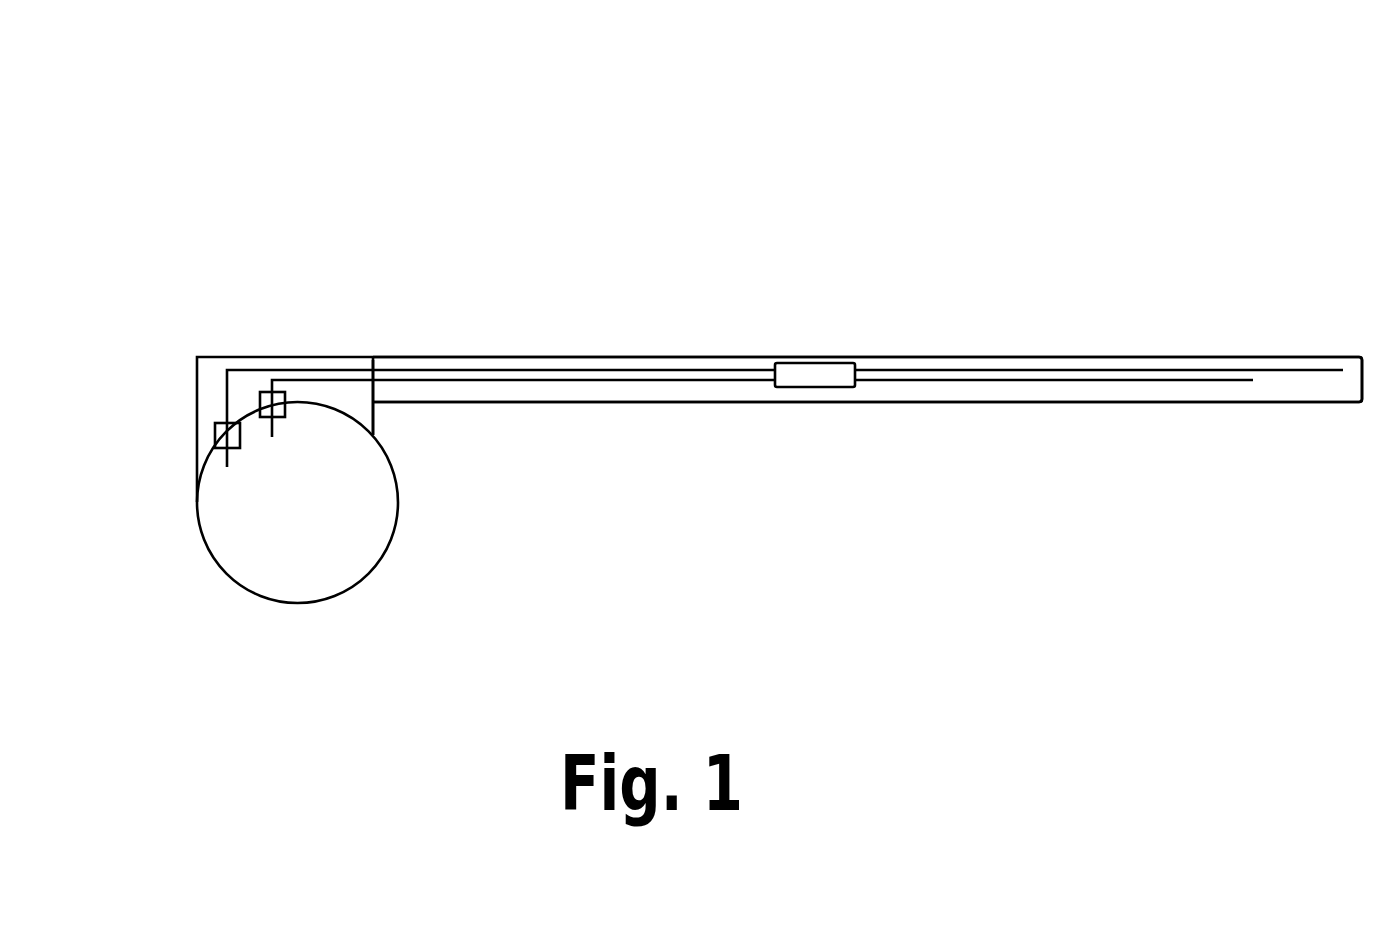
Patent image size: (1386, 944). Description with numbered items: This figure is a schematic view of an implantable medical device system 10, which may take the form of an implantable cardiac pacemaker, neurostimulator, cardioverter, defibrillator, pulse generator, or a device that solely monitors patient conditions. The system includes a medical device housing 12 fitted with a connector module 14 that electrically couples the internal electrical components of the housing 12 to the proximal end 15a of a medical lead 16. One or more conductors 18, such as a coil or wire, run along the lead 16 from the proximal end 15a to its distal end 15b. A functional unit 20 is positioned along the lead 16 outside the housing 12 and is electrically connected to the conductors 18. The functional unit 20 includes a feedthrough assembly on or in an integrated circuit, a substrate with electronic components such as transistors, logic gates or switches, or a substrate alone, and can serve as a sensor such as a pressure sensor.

The medical device system 10 is at (818, 132).
The medical device housing 12 is at (388, 555).
The connector module 14 is at (297, 355).
The proximal end 15a is at (411, 421).
The distal end 15b is at (1287, 448).
The medical lead 16 is at (1083, 357).
The conductor 18 is at (551, 378).
The functional unit 20 is at (803, 373).